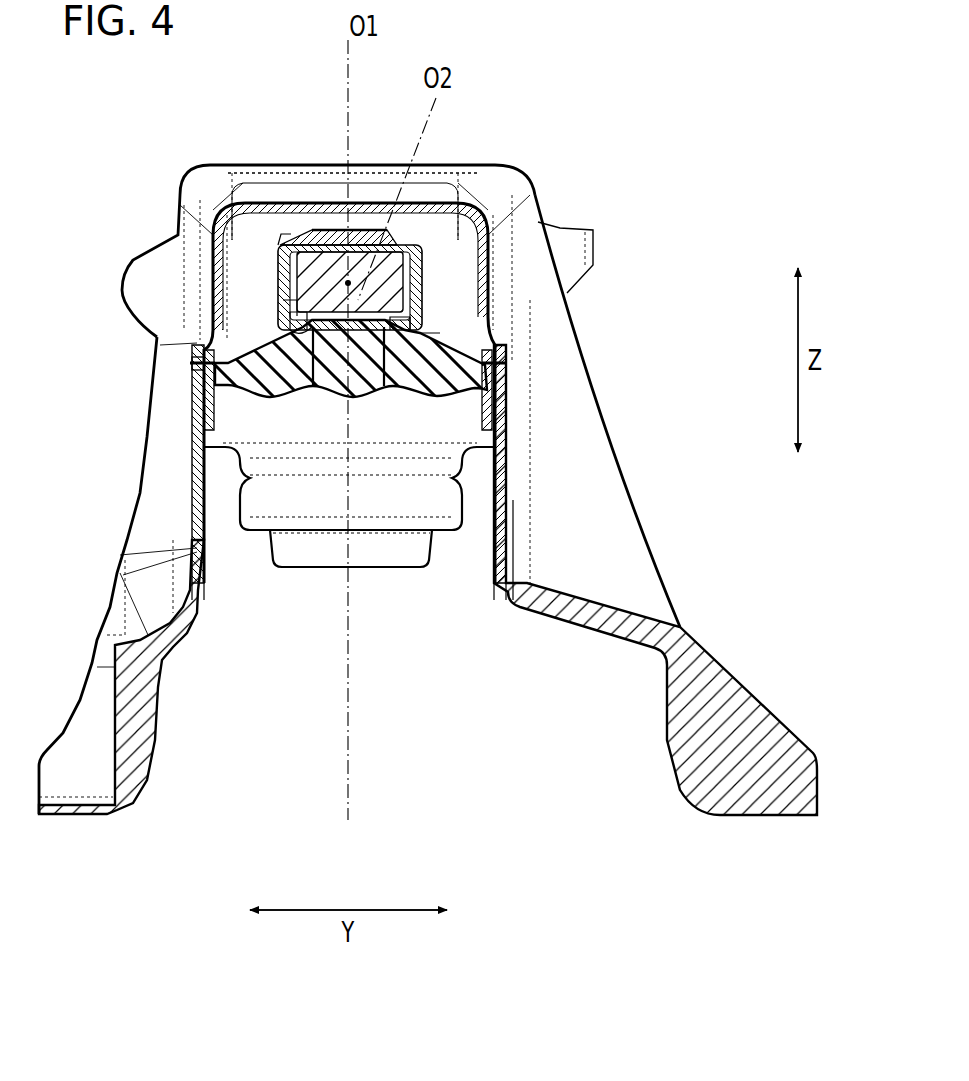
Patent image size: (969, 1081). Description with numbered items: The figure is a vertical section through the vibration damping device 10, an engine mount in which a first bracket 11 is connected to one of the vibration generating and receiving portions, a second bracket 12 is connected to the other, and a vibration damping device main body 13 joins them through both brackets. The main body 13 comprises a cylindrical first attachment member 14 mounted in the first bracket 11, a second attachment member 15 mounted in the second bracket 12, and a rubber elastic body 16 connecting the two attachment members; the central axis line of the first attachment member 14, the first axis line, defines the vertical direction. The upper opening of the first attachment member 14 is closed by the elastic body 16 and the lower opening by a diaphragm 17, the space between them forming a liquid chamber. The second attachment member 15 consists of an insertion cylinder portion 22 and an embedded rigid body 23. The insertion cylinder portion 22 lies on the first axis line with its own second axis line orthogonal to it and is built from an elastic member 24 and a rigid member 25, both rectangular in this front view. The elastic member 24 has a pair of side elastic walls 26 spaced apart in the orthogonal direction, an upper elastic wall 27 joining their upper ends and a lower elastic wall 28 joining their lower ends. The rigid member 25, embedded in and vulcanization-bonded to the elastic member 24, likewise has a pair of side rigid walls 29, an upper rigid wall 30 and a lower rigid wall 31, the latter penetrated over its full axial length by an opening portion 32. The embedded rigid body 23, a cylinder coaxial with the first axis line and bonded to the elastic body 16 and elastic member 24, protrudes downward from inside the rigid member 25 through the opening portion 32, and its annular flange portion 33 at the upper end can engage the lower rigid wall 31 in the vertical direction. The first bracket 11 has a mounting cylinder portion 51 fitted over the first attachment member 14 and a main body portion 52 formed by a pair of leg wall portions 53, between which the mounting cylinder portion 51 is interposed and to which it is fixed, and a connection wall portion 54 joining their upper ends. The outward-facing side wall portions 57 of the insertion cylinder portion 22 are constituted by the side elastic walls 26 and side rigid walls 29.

The vibration damping device 10 is at (598, 95).
The first bracket 11 is at (50, 405).
The second bracket 12 is at (392, 253).
The vibration damping device main body 13 is at (692, 337).
The first attachment member 14 is at (470, 440).
The second attachment member 15 is at (645, 305).
The elastic body 16 is at (452, 395).
The diaphragm 17 is at (427, 547).
The insertion cylinder portion 22 is at (432, 314).
The embedded rigid body 23 is at (500, 377).
The elastic member 24 is at (298, 221).
The rigid member 25 is at (278, 230).
The side elastic walls 26 is at (292, 268).
The upper elastic wall 27 is at (361, 243).
The lower elastic wall 28 is at (207, 383).
The side rigid walls 29 is at (290, 291).
The upper rigid wall 30 is at (333, 232).
The lower rigid wall 31 is at (308, 323).
The opening portion 32 is at (198, 362).
The flange portion 33 is at (300, 316).
The mounting cylinder portion 51 is at (200, 400).
The main body portion 52 is at (140, 457).
The leg wall portions 53 is at (197, 548).
The connection wall portion 54 is at (435, 205).
The side wall portions 57 is at (97, 177).